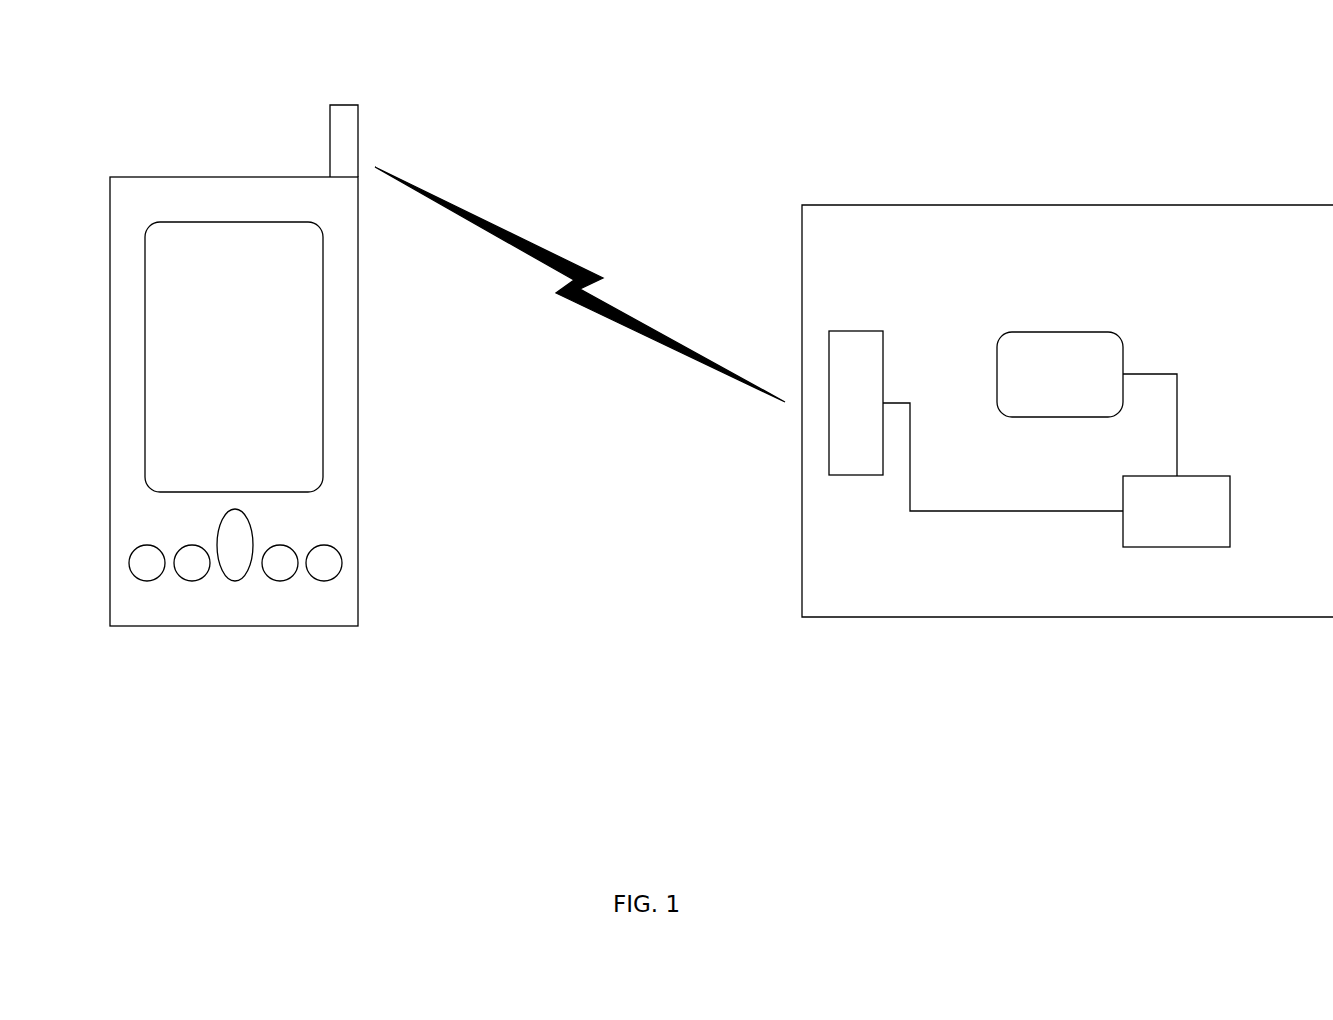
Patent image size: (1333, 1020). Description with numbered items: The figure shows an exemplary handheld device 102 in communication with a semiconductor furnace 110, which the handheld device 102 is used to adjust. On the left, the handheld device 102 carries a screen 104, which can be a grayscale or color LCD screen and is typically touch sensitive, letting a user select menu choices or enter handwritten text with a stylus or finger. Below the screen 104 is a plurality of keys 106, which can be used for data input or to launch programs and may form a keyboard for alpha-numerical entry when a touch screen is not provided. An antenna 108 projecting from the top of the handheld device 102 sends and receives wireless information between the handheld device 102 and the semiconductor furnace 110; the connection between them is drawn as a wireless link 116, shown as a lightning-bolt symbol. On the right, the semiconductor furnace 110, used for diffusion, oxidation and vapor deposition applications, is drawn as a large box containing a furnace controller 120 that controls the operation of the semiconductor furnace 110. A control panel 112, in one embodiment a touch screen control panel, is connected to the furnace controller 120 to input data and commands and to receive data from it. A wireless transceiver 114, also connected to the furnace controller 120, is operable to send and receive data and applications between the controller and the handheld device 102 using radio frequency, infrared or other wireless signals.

The handheld device 102 is at (342, 527).
The screen 104 is at (303, 331).
The keys 106 is at (192, 563).
The antenna 108 is at (358, 110).
The semiconductor furnace 110 is at (927, 223).
The control panel 112 is at (1060, 374).
The wireless transceiver 114 is at (856, 403).
The wireless link 116 is at (490, 222).
The furnace controller 120 is at (1176, 511).